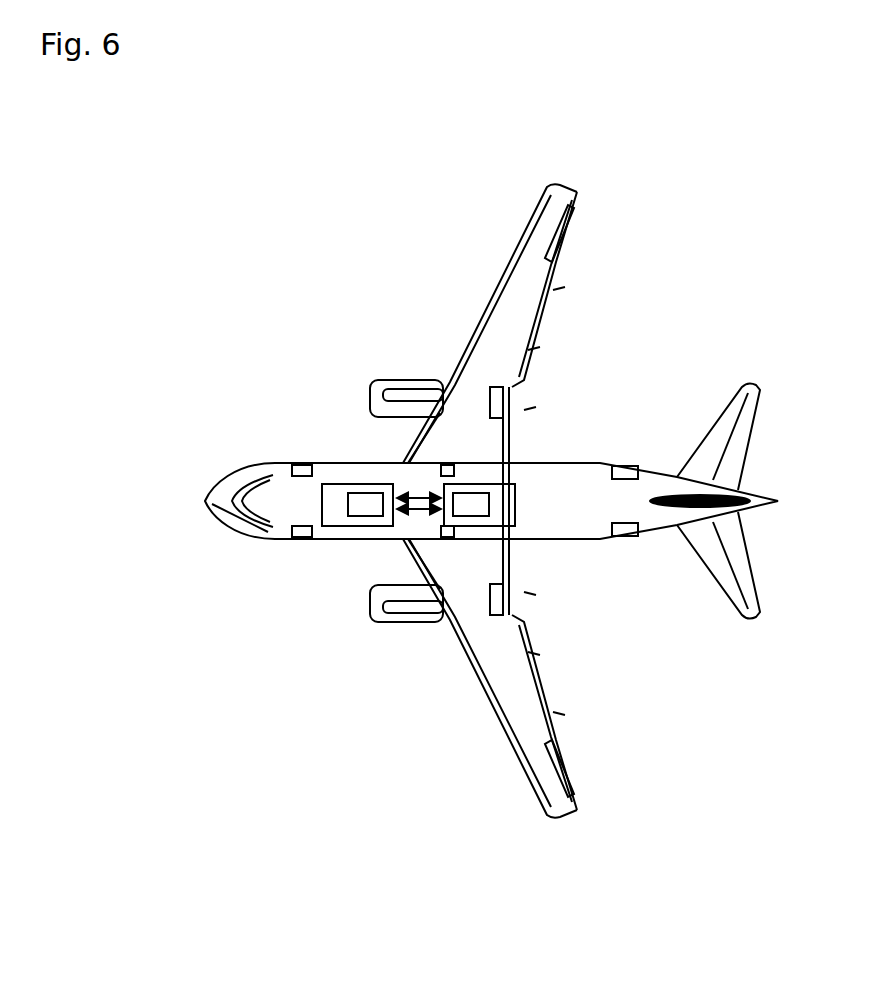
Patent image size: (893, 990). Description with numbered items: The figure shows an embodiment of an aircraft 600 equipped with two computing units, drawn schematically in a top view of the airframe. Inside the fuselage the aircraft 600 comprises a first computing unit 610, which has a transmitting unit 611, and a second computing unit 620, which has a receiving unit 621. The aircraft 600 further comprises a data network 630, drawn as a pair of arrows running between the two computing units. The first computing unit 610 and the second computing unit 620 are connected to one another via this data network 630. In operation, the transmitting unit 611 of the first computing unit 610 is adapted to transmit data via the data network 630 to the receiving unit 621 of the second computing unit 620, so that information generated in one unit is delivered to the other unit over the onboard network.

The aircraft 600 is at (170, 265).
The first computing unit 610 is at (334, 532).
The transmitting unit 611 is at (366, 494).
The second computing unit 620 is at (509, 480).
The receiving unit 621 is at (491, 511).
The data network 630 is at (411, 492).